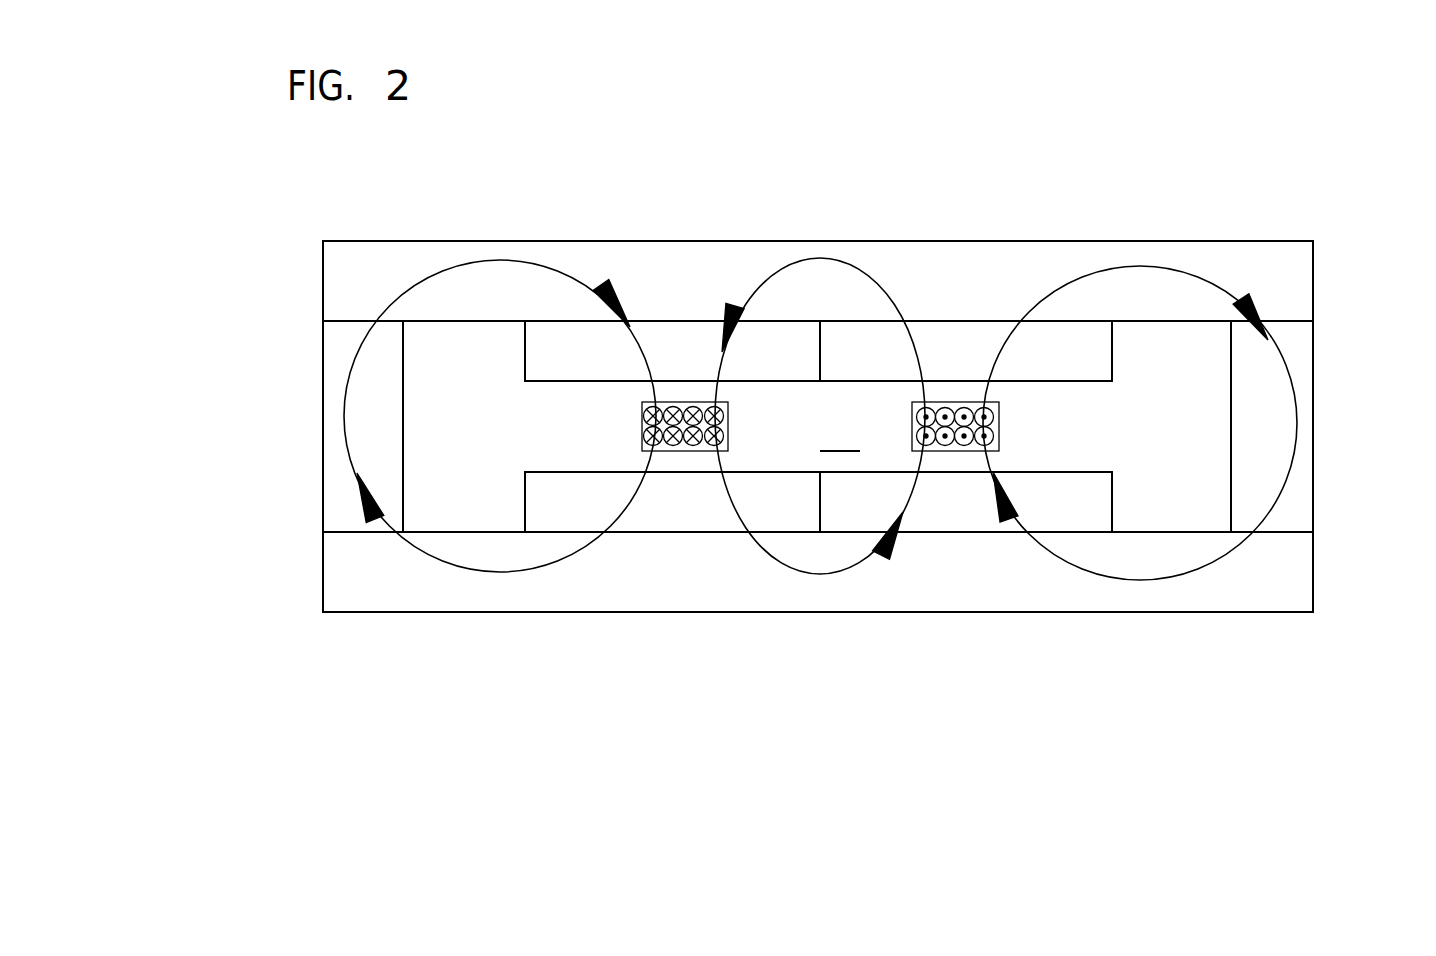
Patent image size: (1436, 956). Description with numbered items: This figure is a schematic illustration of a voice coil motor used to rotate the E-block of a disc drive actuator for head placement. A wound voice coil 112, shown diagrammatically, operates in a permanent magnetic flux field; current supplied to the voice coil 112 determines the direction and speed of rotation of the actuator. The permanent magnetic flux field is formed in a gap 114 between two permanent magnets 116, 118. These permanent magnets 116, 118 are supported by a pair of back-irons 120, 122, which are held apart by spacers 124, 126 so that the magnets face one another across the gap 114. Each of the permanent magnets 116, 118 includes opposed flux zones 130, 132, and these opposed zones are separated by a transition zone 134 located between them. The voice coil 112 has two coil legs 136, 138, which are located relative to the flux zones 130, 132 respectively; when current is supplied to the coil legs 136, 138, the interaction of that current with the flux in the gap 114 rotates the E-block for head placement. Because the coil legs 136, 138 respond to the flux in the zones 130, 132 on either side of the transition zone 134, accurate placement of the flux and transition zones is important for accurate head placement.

The voice coil 112 is at (777, 317).
The gap 114 is at (1192, 438).
The permanent magnet 116 is at (969, 330).
The permanent magnet 118 is at (958, 498).
The back-iron 120 is at (1300, 275).
The back-iron 122 is at (1312, 572).
The spacer 124 is at (338, 497).
The spacer 126 is at (1300, 493).
The flux zone 130 is at (712, 460).
The flux zone 132 is at (927, 470).
The transition zone 134 is at (840, 438).
The coil leg 136 is at (717, 417).
The coil leg 138 is at (995, 417).